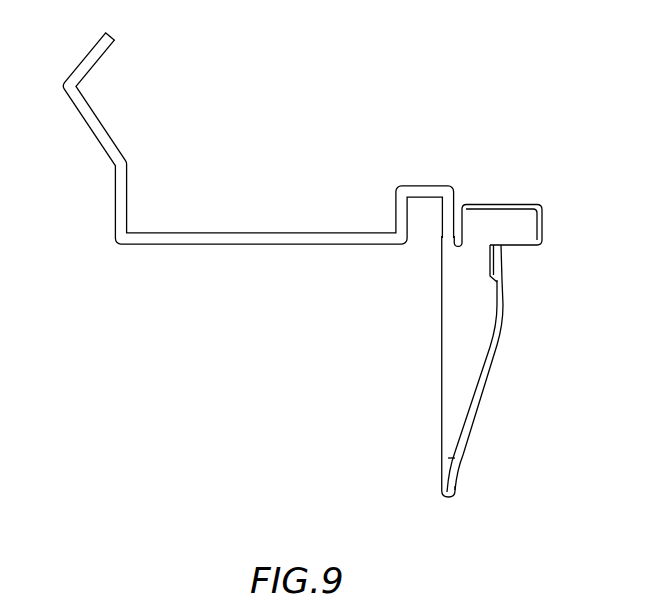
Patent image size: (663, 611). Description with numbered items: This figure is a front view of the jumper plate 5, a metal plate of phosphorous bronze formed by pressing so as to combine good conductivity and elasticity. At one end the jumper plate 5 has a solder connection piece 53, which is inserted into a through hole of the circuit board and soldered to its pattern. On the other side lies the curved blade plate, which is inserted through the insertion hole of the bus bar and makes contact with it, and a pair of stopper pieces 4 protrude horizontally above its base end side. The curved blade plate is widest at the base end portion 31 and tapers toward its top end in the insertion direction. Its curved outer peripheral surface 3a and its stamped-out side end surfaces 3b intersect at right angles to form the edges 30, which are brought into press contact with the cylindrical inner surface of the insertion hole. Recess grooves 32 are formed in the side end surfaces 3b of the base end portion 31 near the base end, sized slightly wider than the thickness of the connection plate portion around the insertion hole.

The jumper plate 5 is at (263, 325).
The solder connection piece 53 is at (88, 118).
The stopper piece 4 is at (485, 227).
The base end portion 31 is at (573, 252).
The recess groove 32 is at (507, 260).
The edge 30 is at (497, 298).
The curved outer peripheral surface 3a is at (452, 395).
The side end surface 3b is at (465, 433).